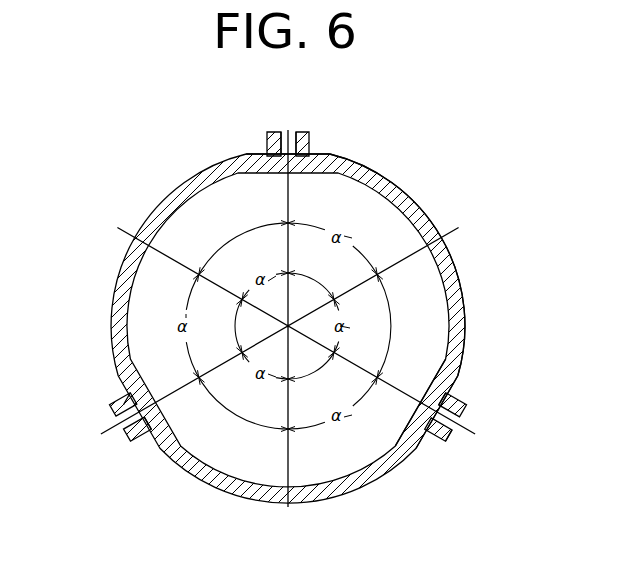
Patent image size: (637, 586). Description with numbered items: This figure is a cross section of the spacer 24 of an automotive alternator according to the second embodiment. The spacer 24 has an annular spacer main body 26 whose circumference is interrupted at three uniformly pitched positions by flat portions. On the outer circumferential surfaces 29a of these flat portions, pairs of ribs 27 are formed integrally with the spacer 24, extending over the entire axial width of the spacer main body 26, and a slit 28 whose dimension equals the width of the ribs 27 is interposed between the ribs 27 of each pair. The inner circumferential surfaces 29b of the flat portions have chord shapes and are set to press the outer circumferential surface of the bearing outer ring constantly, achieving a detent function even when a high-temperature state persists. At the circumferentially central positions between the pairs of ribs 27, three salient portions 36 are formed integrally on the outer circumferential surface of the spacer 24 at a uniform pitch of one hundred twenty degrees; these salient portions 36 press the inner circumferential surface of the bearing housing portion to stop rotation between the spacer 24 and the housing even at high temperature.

The spacer 24 is at (466, 272).
The spacer main body 26 is at (408, 193).
The ribs 27 is at (268, 142).
The slit 28 is at (291, 131).
The outer circumferential surfaces of the flat portions 29a is at (335, 154).
The inner circumferential surfaces of the flat portions 29b is at (423, 378).
The salient portions 36 is at (128, 222).